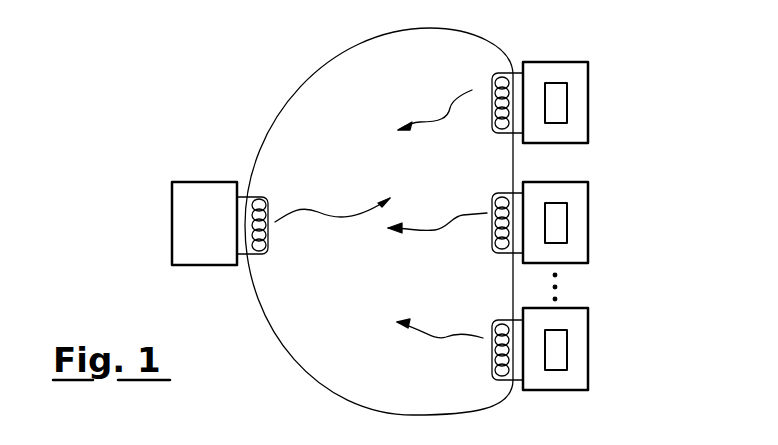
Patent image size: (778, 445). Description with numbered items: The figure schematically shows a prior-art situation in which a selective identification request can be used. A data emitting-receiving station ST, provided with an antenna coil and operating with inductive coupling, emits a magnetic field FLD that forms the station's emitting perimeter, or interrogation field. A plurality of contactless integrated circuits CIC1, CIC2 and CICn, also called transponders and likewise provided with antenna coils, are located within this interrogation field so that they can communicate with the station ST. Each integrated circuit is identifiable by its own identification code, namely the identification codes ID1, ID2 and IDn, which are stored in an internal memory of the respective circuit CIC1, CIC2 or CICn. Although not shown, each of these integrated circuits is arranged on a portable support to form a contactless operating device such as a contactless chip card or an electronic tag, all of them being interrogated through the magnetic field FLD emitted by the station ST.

The magnetic field FLD is at (306, 82).
The data emitting-receiving station ST is at (222, 236).
The contactless integrated circuit CIC1 is at (588, 75).
The identification code ID1 is at (556, 103).
The contactless integrated circuit CIC2 is at (588, 195).
The identification code ID2 is at (556, 223).
The contactless integrated circuit CICn is at (588, 322).
The identification code IDn is at (556, 350).